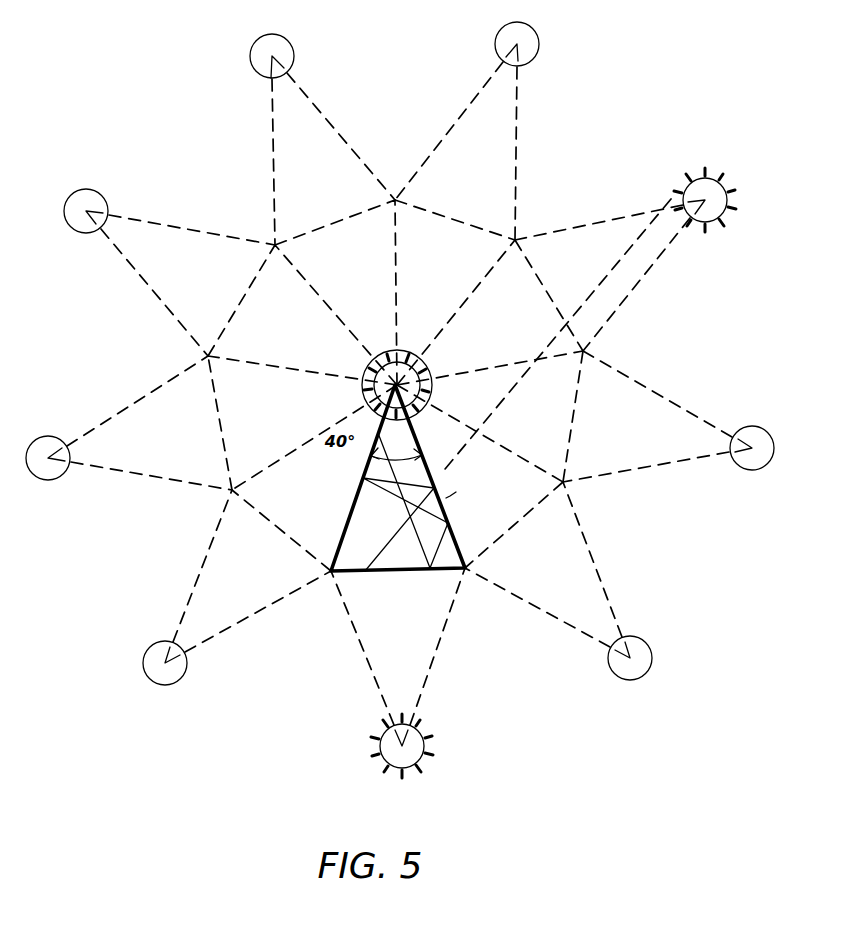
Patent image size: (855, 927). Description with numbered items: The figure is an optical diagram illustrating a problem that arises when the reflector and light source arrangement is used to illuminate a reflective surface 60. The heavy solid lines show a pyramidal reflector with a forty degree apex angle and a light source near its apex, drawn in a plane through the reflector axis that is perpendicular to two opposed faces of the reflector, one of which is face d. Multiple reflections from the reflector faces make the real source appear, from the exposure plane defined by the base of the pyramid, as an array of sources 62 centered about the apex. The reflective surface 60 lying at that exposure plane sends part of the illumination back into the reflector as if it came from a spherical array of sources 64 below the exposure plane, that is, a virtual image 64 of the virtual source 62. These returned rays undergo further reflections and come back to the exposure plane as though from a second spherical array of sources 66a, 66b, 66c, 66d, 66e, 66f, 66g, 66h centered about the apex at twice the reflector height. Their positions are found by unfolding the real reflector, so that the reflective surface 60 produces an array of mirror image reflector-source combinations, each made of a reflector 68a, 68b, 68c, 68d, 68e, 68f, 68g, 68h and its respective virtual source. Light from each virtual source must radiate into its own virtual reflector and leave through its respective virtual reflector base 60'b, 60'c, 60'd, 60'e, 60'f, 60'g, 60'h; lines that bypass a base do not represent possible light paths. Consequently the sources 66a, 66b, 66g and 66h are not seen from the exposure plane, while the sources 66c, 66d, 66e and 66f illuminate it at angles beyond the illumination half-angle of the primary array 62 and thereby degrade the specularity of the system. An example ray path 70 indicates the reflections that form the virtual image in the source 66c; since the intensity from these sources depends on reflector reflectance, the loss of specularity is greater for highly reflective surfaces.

The reflective surface 60 is at (398, 495).
The virtual reflector base 60'b is at (490, 416).
The virtual reflector base 60'c is at (490, 312).
The virtual reflector base 60'd is at (455, 292).
The virtual reflector base 60'e is at (336, 292).
The virtual reflector base 60'f is at (302, 315).
The virtual reflector base 60'g is at (302, 423).
The virtual reflector base 60'h is at (314, 478).
The array of sources 62 is at (434, 372).
The virtual image of the virtual source 64 is at (439, 733).
The virtual source 66a is at (652, 645).
The virtual source 66b is at (768, 428).
The virtual source 66c is at (722, 170).
The virtual source 66d is at (536, 32).
The virtual source 66e is at (292, 39).
The virtual source 66f is at (97, 195).
The virtual source 66g is at (39, 441).
The virtual source 66h is at (146, 646).
The reflector 68a is at (602, 582).
The reflector 68b is at (673, 404).
The reflector 68c is at (573, 229).
The reflector 68d is at (484, 94).
The reflector 68e is at (271, 108).
The reflector 68f is at (135, 274).
The reflector 68g is at (143, 477).
The reflector 68h is at (276, 607).
The ray path 70 is at (392, 537).
The reflector face d is at (458, 490).